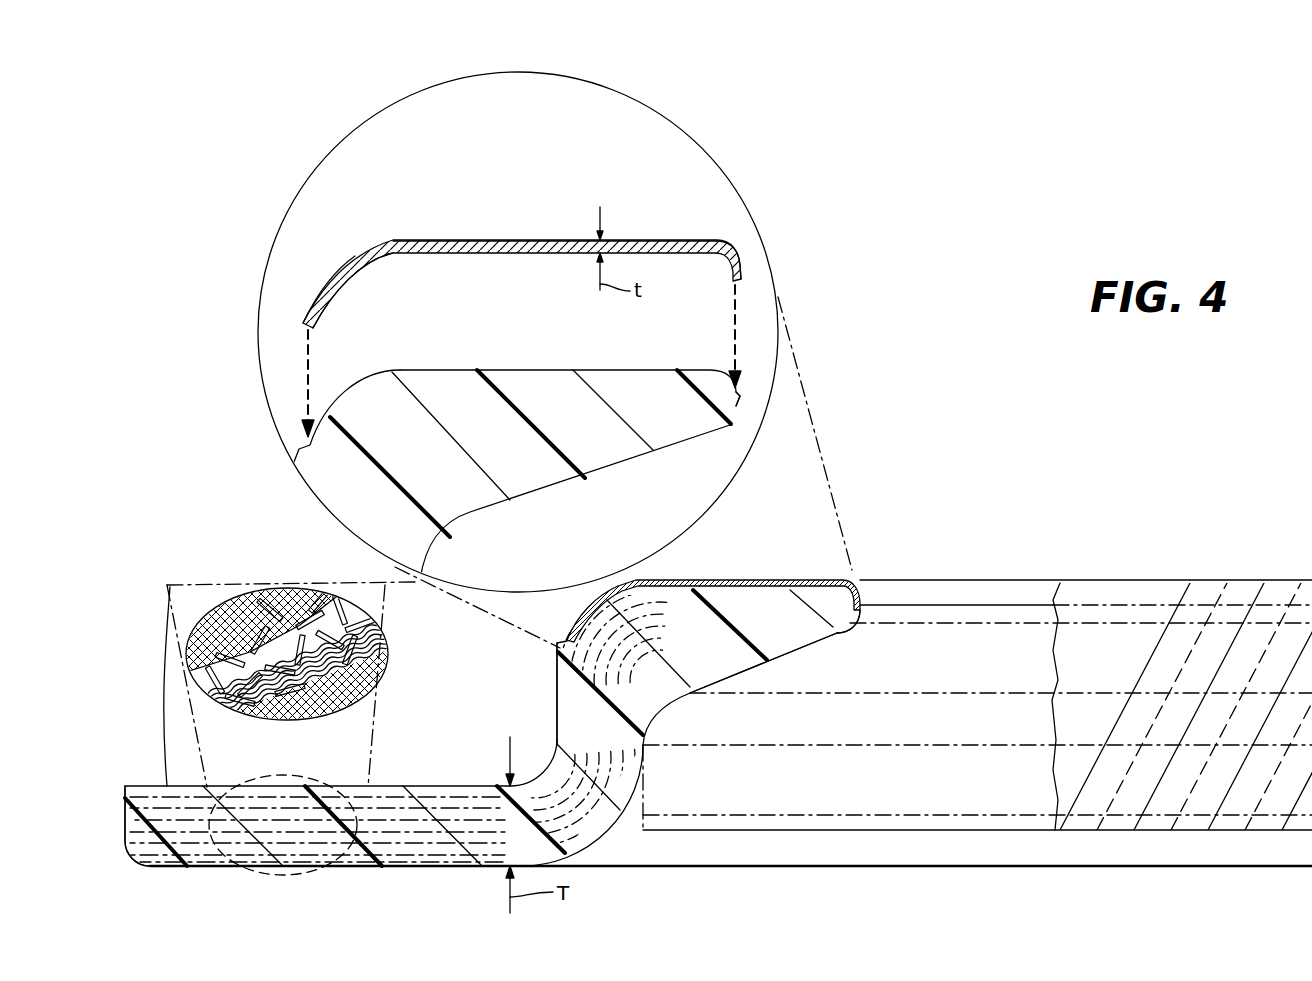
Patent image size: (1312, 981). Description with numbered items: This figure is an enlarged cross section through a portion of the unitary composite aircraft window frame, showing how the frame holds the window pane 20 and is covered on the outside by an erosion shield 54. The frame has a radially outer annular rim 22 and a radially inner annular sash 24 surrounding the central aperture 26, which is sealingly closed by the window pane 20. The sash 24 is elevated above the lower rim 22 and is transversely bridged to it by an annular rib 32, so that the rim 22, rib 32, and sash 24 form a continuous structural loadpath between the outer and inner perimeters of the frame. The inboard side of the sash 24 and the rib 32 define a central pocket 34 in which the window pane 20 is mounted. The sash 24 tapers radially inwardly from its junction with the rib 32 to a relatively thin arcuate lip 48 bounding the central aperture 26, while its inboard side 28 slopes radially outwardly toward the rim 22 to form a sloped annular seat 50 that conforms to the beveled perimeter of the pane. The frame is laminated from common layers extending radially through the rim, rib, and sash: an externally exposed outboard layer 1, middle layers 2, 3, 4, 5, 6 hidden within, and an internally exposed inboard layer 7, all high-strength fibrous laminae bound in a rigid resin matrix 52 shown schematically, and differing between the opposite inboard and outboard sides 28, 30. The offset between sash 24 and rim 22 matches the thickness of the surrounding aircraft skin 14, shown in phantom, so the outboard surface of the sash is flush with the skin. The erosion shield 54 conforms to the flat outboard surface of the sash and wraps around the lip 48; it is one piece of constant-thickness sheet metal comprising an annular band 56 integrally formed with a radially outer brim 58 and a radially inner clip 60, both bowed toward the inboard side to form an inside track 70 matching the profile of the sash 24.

The outboard layer 1 is at (228, 602).
The middle layer 2 is at (208, 662).
The middle layer 3 is at (222, 705).
The middle layer 4 is at (228, 709).
The middle layer 5 is at (237, 714).
The middle layer 6 is at (238, 712).
The inboard layer 7 is at (290, 708).
The aircraft skin 14 is at (257, 585).
The window pane 20 is at (1240, 652).
The rim 22 is at (324, 834).
The sash 24 is at (510, 457).
The central aperture 26 is at (952, 598).
The inboard side 28 is at (360, 867).
The outboard side 30 is at (472, 785).
The rib 32 is at (555, 700).
The central pocket 34 is at (909, 736).
The lip 48 is at (736, 408).
The seat 50 is at (748, 668).
The resin matrix 52 is at (128, 828).
The erosion shield 54 is at (455, 236).
The band 56 is at (522, 240).
The brim 58 is at (332, 280).
The clip 60 is at (725, 247).
The track 70 is at (370, 263).